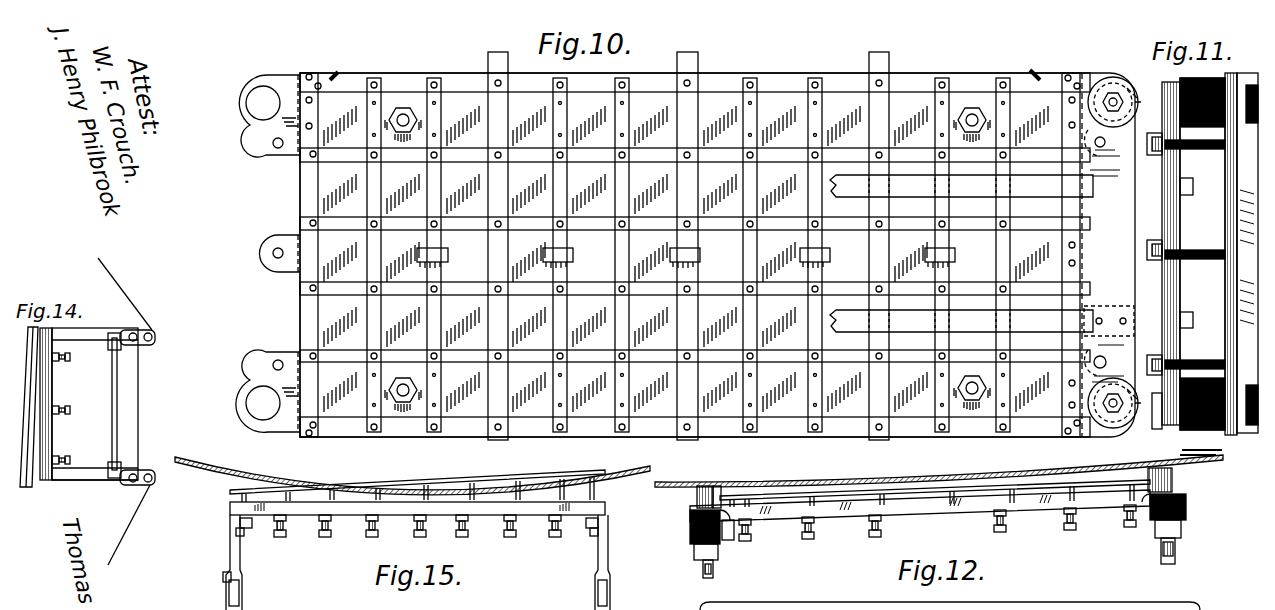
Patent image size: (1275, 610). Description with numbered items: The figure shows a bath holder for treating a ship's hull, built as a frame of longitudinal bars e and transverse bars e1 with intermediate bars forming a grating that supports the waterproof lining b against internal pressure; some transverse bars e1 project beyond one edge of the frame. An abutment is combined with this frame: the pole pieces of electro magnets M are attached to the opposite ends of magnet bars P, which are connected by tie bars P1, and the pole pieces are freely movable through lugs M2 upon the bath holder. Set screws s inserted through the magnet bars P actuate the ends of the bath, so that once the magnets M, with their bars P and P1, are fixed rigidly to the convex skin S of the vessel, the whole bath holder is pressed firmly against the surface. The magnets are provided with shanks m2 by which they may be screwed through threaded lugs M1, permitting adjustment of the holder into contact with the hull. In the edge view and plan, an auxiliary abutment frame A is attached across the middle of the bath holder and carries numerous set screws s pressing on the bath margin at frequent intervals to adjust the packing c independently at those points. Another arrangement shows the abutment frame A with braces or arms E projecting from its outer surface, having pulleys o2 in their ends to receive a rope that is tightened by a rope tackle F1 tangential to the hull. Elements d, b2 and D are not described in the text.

In FIG. 10, the lugs M2 is at (240, 100).
In FIG. 11, the lugs M2 is at (1195, 160).
In FIG. 10, the longitudinal bars e is at (466, 73).
In FIG. 11, the longitudinal bars e is at (1237, 220).
In FIG. 14, the longitudinal bars e is at (46, 482).
In FIG. 15, the longitudinal bars e is at (228, 492).
In FIG. 12, the longitudinal bars e is at (906, 494).
In FIG. 10, the nut d is at (402, 112).
In FIG. 10, the lining b is at (960, 243).
In FIG. 10, the clamp block b2 is at (446, 250).
In FIG. 10, the longitudinal bar D is at (668, 249).
In FIG. 10, the transverse bars e1 is at (438, 314).
In FIG. 10, the tie bars P1 is at (888, 186).
In FIG. 11, the tie bars P1 is at (1195, 251).
In FIG. 10, the magnet bars P is at (880, 322).
In FIG. 11, the magnet bars P is at (1195, 290).
In FIG. 12, the magnet bars P is at (693, 548).
In FIG. 10, the set screws s is at (1100, 258).
In FIG. 11, the set screws s is at (1199, 262).
In FIG. 14, the set screws s is at (72, 357).
In FIG. 15, the skin S is at (410, 487).
In FIG. 12, the skin S is at (1020, 472).
In FIG. 11, the packing c is at (1241, 254).
In FIG. 14, the packing c is at (24, 487).
In FIG. 15, the packing c is at (215, 483).
In FIG. 12, the packing c is at (825, 482).
In FIG. 11, the abutment frame A is at (1232, 330).
In FIG. 14, the abutment frame A is at (56, 430).
In FIG. 15, the abutment frame A is at (606, 510).
In FIG. 12, the abutment frame A is at (1104, 512).
In FIG. 14, the braces or arms E is at (90, 483).
In FIG. 15, the braces or arms E is at (230, 548).
In FIG. 14, the rope tackle F1 is at (120, 519).
In FIG. 14, the pulleys o2 is at (134, 472).
In FIG. 15, the pulleys o2 is at (226, 596).
In FIG. 12, the electro magnets M is at (696, 505).
In FIG. 12, the shanks m2 is at (714, 570).
In FIG. 11, the lugs M1 is at (1220, 430).
In FIG. 12, the lugs M1 is at (1180, 460).